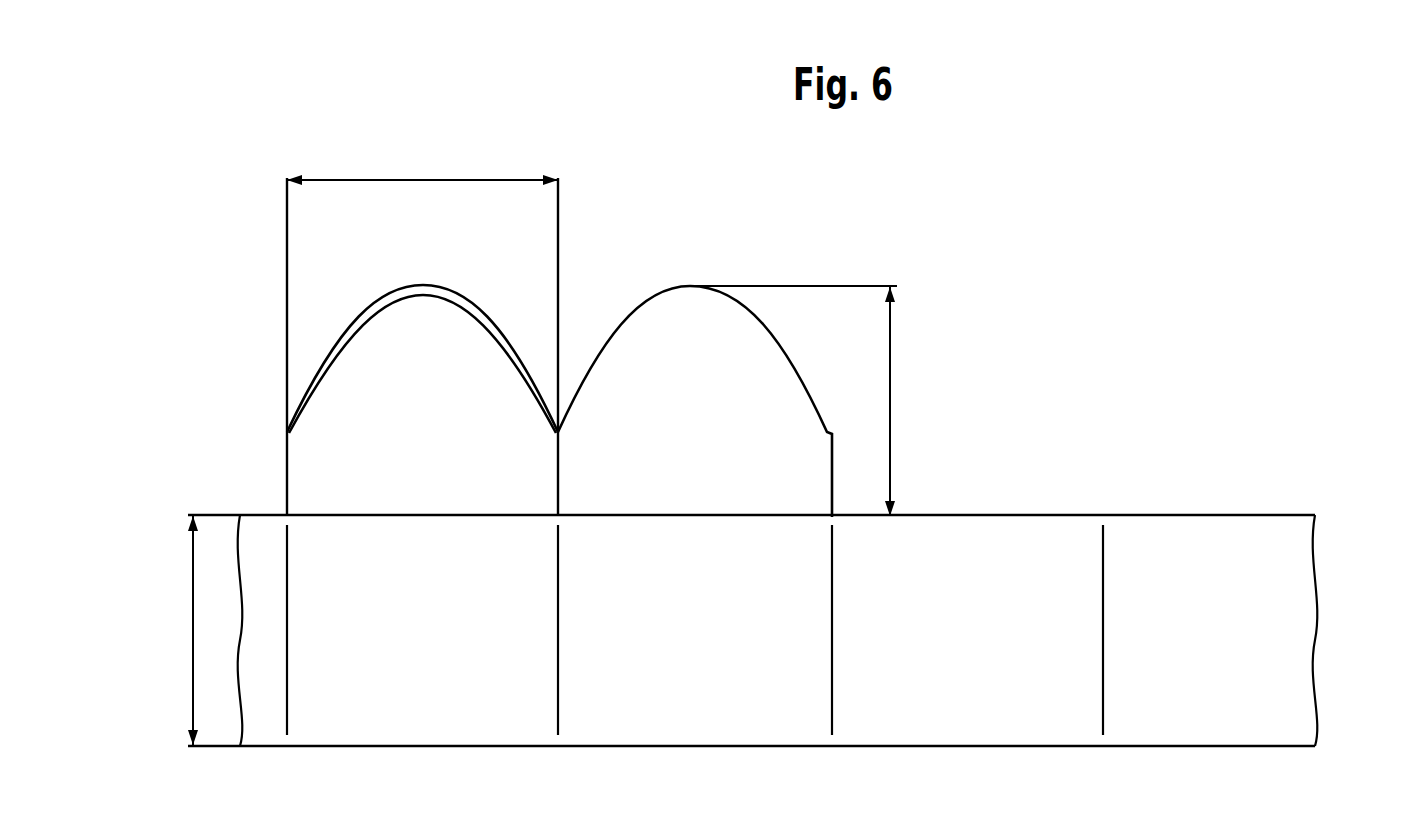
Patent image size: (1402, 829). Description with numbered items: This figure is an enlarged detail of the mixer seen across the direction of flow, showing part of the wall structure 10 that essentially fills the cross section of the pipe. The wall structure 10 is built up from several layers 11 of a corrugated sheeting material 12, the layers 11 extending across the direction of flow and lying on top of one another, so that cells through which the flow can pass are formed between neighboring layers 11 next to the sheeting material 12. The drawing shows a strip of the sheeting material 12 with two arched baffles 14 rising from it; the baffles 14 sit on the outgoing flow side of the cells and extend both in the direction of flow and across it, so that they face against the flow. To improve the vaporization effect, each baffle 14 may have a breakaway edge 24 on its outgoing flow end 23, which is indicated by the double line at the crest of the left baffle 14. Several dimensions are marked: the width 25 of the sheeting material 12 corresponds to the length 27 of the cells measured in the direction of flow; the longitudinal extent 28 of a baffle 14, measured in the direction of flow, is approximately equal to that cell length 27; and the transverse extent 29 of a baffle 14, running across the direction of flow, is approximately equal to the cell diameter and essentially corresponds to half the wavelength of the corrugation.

The wall structure 10 is at (1022, 308).
The layers 11 is at (1293, 633).
The sheeting material 12 is at (1177, 508).
The baffle 14 is at (366, 360).
The outgoing flow end 23 is at (376, 302).
The breakaway edge 24 is at (414, 303).
The width 25 is at (192, 632).
The length 27 is at (193, 630).
The longitudinal extent 28 is at (890, 398).
The transverse extent 29 is at (423, 180).